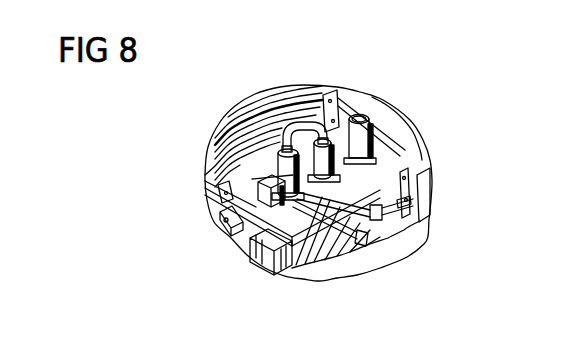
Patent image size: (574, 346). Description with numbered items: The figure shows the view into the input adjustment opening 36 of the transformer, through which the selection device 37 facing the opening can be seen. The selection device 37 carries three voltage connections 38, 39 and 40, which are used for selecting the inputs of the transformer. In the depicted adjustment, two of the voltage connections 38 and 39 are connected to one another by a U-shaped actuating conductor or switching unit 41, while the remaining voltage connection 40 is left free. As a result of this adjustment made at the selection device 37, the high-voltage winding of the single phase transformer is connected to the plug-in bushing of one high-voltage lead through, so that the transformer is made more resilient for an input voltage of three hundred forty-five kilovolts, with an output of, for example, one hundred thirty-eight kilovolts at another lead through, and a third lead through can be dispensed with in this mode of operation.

The input adjustment opening 36 is at (408, 100).
The selection device 37 is at (233, 180).
The voltage connection 38 is at (294, 235).
The voltage connection 39 is at (337, 200).
The voltage connection 40 is at (400, 162).
The U-shaped actuating conductor or switching unit 41 is at (303, 122).